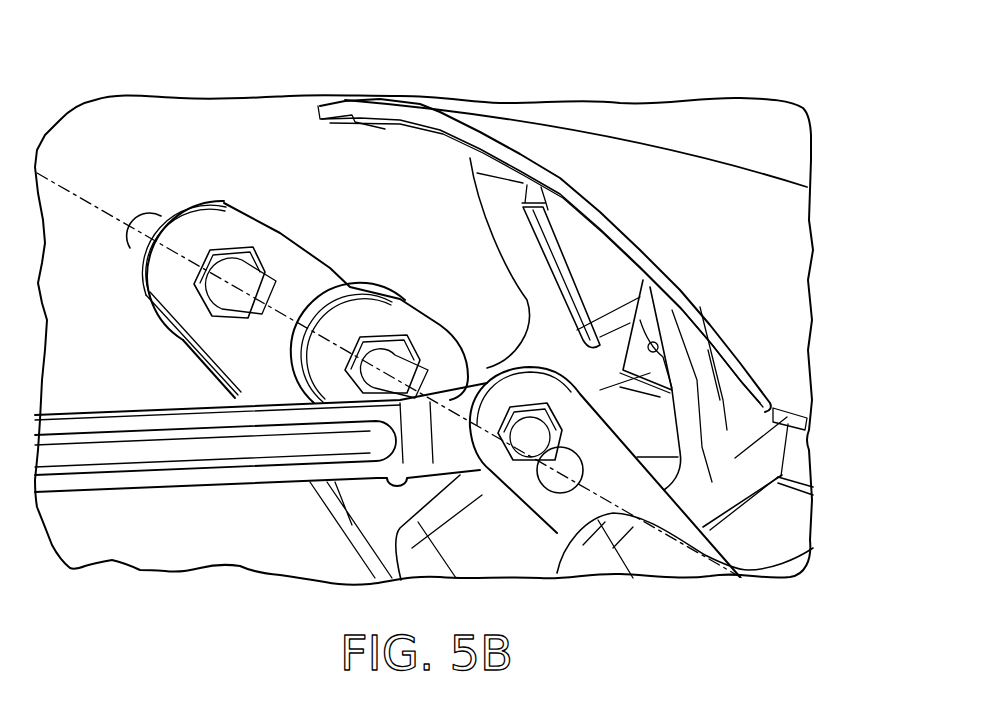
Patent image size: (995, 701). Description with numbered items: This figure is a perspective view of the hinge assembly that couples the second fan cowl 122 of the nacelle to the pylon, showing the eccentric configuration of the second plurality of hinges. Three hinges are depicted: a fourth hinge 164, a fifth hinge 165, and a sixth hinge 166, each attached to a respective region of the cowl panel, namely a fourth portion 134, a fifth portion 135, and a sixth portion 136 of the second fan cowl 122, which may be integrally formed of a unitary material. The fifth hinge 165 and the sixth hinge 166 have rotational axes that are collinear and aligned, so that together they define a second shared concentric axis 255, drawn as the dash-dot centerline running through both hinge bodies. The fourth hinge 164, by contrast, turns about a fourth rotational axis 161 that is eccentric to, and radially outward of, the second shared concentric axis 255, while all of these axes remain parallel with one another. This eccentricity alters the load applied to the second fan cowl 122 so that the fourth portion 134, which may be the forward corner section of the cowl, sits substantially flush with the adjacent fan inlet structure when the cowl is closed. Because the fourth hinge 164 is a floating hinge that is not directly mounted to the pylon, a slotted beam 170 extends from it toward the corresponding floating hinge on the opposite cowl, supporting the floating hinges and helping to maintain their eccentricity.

The second fan cowl 122 is at (796, 248).
The fourth portion 134 is at (790, 363).
The fifth portion 135 is at (670, 233).
The sixth portion 136 is at (530, 148).
The fourth rotational axis 161 is at (545, 385).
The fourth hinge 164 is at (490, 495).
The fifth hinge 165 is at (426, 288).
The sixth hinge 166 is at (156, 346).
The beam 170 is at (190, 478).
The second shared concentric axis 255 is at (532, 492).